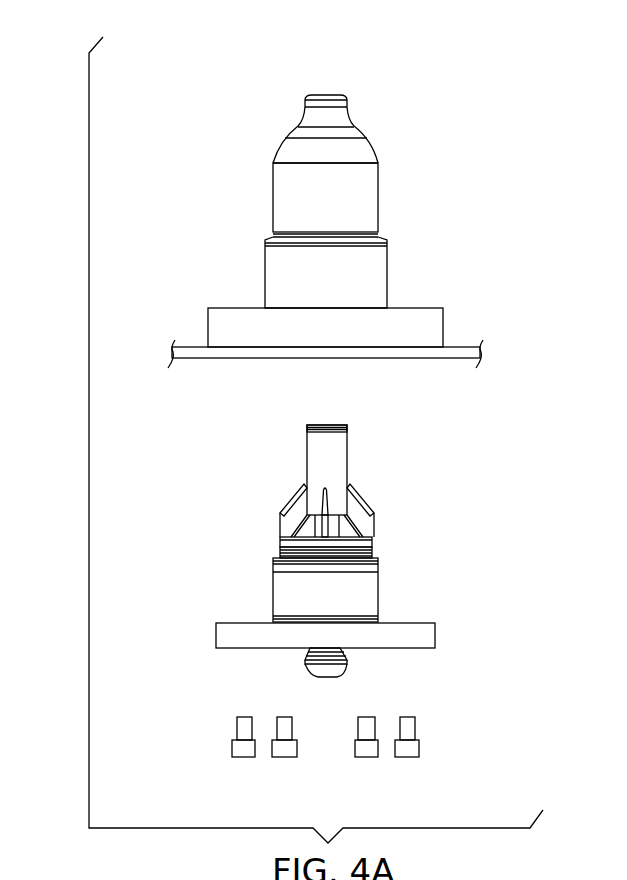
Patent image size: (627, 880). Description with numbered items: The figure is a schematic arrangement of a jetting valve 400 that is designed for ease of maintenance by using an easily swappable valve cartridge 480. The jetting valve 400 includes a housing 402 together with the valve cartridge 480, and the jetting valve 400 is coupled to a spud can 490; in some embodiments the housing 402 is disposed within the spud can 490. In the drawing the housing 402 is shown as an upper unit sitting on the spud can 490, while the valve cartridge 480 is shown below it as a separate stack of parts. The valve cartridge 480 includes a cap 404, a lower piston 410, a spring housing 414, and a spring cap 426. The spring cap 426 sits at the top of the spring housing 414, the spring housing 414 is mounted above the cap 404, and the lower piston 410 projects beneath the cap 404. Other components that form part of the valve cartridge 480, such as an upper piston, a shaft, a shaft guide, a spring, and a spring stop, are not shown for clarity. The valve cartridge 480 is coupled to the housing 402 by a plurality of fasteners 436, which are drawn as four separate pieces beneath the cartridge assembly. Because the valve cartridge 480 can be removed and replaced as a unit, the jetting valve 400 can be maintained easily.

The jetting valve 400 is at (228, 123).
The housing 402 is at (378, 196).
The spud can 490 is at (463, 326).
The valve cartridge 480 is at (221, 454).
The spring cap 426 is at (346, 426).
The spring housing 414 is at (347, 460).
The cap 404 is at (436, 632).
The lower piston 410 is at (345, 672).
The fastener 436 is at (414, 750).